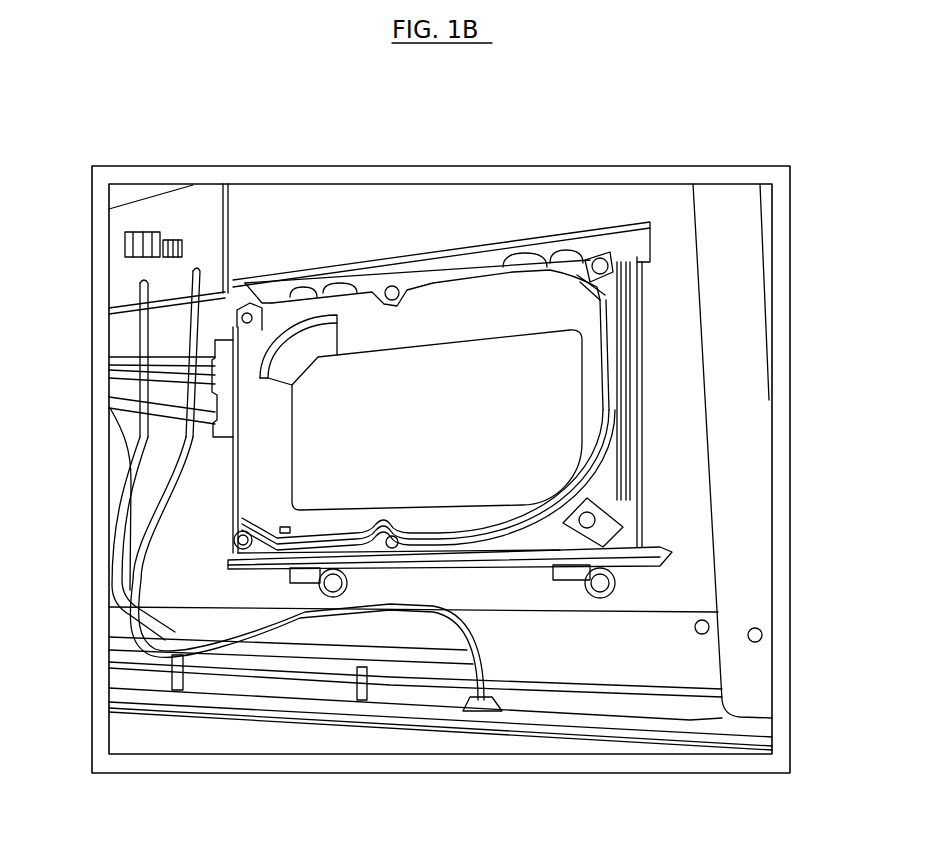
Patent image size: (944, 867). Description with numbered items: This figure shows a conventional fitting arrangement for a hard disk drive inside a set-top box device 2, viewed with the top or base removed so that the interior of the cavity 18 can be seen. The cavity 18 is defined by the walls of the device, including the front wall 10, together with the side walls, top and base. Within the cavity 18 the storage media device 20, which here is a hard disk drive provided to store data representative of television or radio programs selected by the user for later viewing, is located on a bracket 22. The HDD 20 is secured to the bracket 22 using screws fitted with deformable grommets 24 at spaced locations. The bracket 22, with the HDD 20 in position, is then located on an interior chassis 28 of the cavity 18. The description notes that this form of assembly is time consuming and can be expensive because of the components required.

The device 2 is at (772, 665).
The front wall 10 is at (665, 745).
The cavity 18 is at (723, 468).
The storage media device 20 is at (582, 418).
The bracket 22 is at (390, 267).
The deformable grommets 24 is at (390, 287).
The interior chassis 28 is at (160, 580).